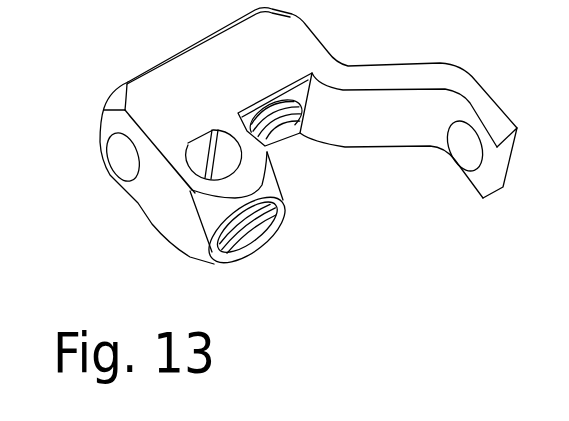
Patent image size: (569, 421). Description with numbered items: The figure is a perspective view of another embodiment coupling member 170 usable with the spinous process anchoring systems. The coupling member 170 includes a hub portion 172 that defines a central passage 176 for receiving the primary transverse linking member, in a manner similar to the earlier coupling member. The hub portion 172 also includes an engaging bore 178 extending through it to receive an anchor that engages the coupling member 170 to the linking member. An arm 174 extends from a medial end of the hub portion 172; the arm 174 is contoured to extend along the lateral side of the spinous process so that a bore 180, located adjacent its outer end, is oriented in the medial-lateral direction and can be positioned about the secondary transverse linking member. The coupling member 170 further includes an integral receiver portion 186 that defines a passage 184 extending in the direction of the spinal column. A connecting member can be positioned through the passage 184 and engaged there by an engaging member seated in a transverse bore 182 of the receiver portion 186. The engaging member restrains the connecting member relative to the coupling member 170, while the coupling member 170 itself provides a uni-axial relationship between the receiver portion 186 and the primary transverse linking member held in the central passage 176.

The coupling member 170 is at (286, 177).
The hub portion 172 is at (165, 88).
The arm 174 is at (385, 135).
The central passage 176 is at (128, 155).
The engaging bore 178 is at (267, 123).
The bore 180 is at (460, 148).
The transverse bore 182 is at (267, 230).
The passage 184 is at (147, 203).
The receiver portion 186 is at (264, 181).